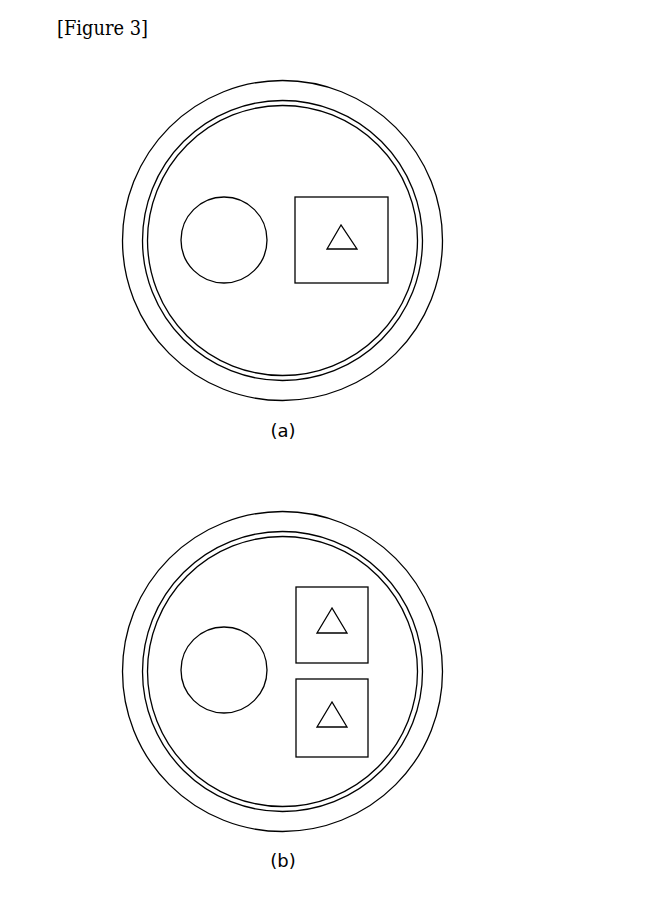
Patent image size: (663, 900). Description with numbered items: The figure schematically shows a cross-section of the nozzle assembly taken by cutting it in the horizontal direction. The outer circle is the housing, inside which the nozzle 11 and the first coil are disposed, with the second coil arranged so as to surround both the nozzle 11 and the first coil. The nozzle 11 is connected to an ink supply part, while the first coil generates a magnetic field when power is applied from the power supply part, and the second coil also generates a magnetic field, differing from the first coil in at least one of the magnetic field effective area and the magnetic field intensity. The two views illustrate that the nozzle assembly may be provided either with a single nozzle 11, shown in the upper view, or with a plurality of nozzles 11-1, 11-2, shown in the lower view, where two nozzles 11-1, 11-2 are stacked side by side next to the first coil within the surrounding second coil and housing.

The nozzle 11 is at (388, 240).
The nozzle 11-1 is at (368, 622).
The nozzle 11-2 is at (368, 713).